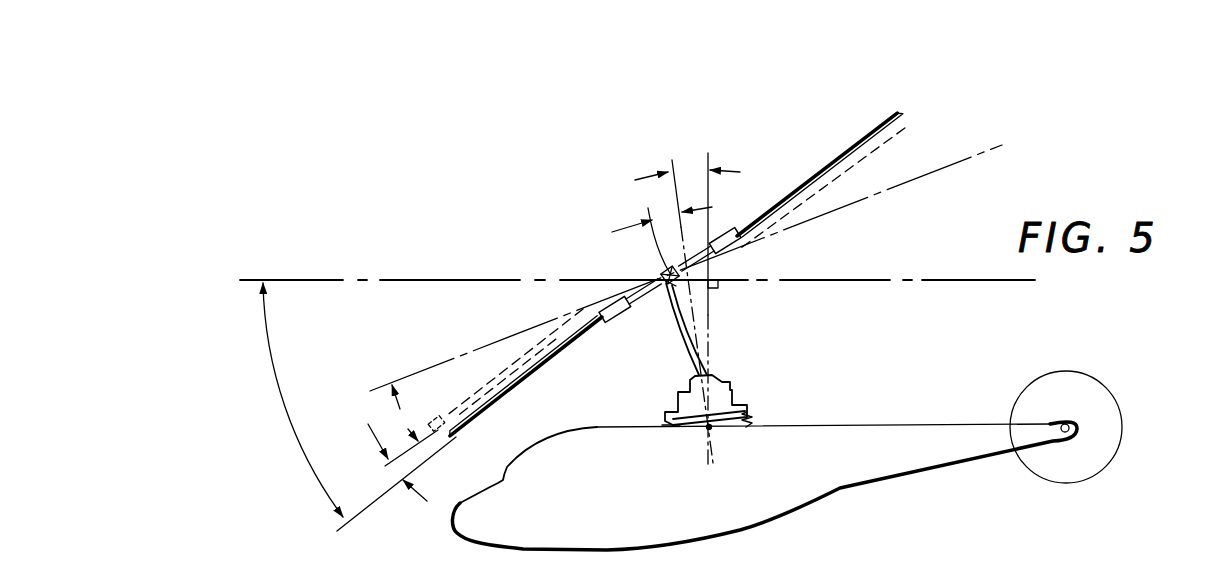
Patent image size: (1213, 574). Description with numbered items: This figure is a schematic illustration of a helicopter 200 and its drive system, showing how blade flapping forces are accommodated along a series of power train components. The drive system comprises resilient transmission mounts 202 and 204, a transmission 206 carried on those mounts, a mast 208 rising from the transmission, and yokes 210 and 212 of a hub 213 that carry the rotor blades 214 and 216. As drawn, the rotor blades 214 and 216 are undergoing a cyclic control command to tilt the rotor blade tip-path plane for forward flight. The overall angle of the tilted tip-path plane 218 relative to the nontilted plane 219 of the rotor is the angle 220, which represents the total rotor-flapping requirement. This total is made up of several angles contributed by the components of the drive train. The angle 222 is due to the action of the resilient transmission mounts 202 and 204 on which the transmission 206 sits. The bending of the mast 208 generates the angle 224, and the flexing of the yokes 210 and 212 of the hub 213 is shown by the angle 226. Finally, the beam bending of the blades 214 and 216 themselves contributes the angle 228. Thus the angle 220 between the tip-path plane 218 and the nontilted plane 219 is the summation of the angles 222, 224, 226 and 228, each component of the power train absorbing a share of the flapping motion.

The helicopter 200 is at (781, 503).
The resilient transmission mount 202 is at (670, 424).
The resilient transmission mount 204 is at (750, 413).
The transmission 206 is at (719, 383).
The mast 208 is at (702, 338).
The yoke 210 is at (656, 272).
The yoke 212 is at (684, 268).
The hub 213 is at (671, 290).
The blade 214 is at (499, 401).
The blade 216 is at (856, 147).
The tip-path plane 218 is at (360, 511).
The nontilted plane 219 is at (320, 279).
The angle 220 is at (303, 400).
The angle 222 is at (692, 172).
The angle 224 is at (664, 219).
The angle 226 is at (686, 293).
The angle 228 is at (398, 468).